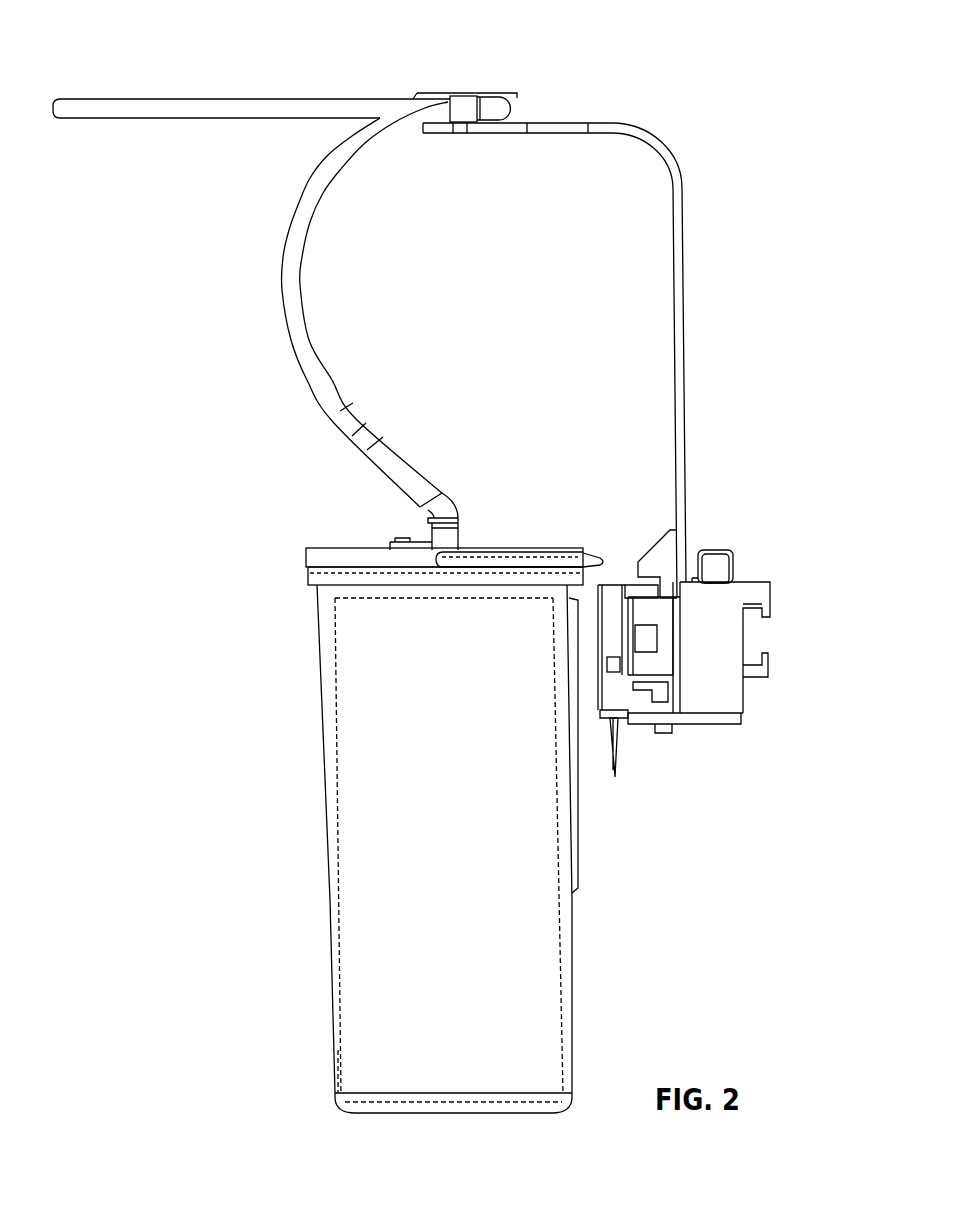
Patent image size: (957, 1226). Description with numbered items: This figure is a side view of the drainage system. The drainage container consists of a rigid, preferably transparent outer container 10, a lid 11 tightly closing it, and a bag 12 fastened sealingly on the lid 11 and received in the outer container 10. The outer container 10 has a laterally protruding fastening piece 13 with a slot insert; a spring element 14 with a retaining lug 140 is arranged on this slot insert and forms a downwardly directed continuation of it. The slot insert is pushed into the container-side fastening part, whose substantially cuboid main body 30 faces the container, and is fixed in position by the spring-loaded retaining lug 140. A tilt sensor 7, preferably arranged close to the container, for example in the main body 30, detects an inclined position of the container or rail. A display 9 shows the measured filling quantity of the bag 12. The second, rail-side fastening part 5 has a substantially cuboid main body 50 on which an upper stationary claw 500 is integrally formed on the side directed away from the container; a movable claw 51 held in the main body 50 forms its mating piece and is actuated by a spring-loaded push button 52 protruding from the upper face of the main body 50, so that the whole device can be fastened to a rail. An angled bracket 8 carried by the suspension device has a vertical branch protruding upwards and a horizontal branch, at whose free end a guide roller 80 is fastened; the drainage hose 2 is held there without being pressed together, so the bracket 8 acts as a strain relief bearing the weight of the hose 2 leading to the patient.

The drainage hose 2 is at (176, 112).
The guide roller 80 is at (493, 93).
The angled bracket 8 is at (686, 283).
The display 9 is at (663, 545).
The second, rail-side fastening part 5 is at (719, 533).
The spring-loaded push button 52 is at (718, 565).
The upper stationary claw 500 is at (745, 605).
The movable claw 51 is at (762, 670).
The main body 50 is at (702, 700).
The main body 30 is at (625, 593).
The tilt sensor 7 is at (613, 672).
The retaining lug 140 is at (618, 748).
The spring element 14 is at (675, 720).
The fastening piece 13 is at (577, 783).
The lid 11 is at (308, 578).
The outer container 10 is at (317, 633).
The bag 12 is at (334, 950).